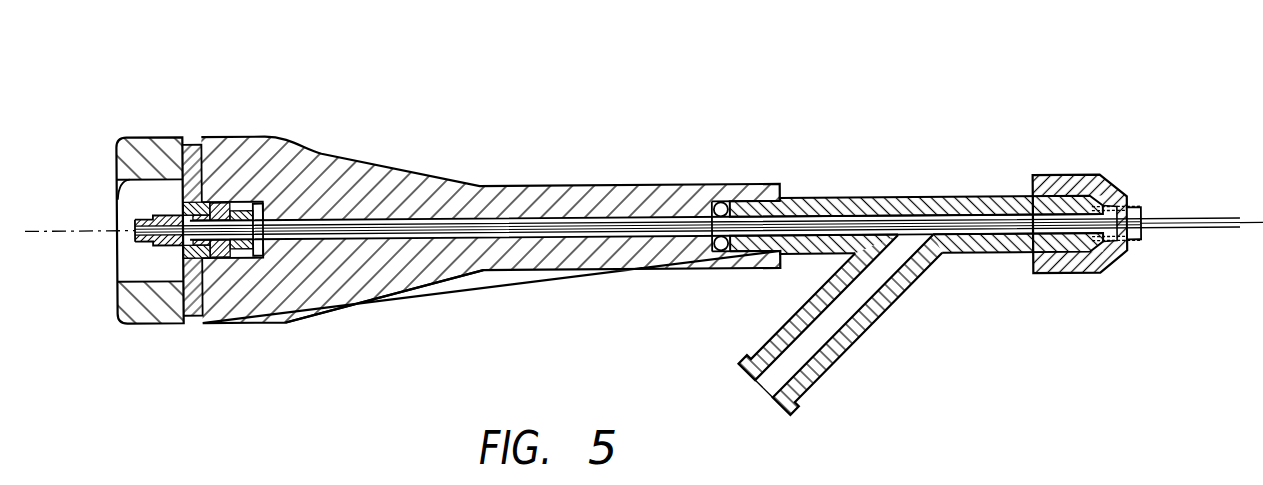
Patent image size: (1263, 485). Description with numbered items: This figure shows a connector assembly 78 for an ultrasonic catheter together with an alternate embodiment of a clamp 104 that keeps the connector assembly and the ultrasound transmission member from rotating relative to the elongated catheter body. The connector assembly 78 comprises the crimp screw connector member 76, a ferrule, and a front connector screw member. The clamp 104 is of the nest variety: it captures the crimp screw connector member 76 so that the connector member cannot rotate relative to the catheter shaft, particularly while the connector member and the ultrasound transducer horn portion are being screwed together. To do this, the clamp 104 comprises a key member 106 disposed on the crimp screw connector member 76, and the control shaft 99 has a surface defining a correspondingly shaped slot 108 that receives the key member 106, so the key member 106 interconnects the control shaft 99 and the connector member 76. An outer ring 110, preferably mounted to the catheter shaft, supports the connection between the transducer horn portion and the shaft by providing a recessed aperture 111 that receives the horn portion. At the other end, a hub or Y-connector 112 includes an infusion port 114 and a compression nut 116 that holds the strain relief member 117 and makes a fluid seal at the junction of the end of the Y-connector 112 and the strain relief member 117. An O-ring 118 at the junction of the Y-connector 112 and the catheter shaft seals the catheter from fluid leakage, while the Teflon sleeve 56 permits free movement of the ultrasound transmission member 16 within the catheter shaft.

The ultrasound transmission member 16 is at (1166, 228).
The Teflon sleeve 56 is at (430, 217).
The crimp screw connector member 76 is at (163, 213).
The connector assembly 78 is at (202, 257).
The control shaft 99 is at (318, 316).
The clamp 104 is at (210, 173).
The key member 106 is at (213, 183).
The slot 108 is at (233, 178).
The outer ring 110 is at (126, 136).
The recessed aperture 111 is at (112, 201).
The Y-connector 112 is at (868, 195).
The infusion port 114 is at (834, 356).
The compression nut 116 is at (1066, 179).
The strain relief member 117 is at (1136, 205).
The O-ring 118 is at (723, 197).